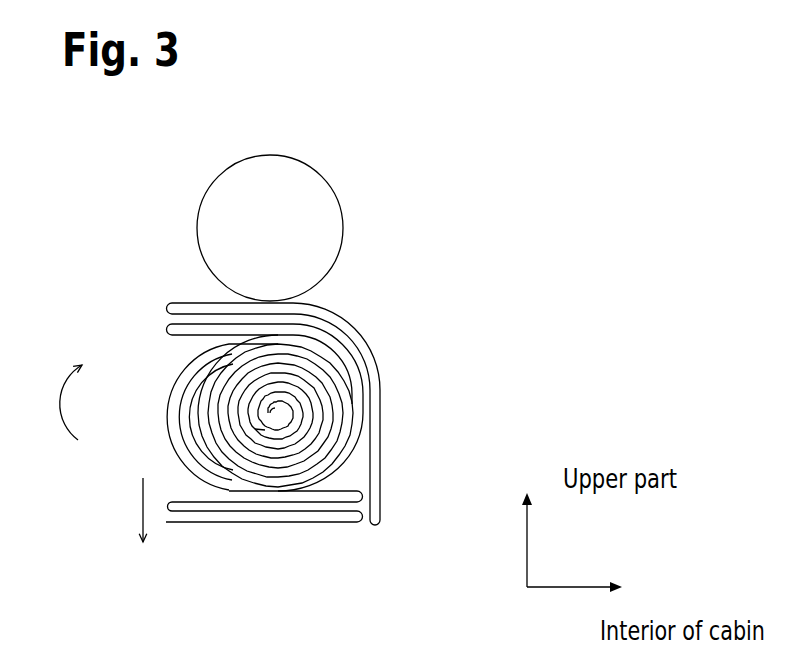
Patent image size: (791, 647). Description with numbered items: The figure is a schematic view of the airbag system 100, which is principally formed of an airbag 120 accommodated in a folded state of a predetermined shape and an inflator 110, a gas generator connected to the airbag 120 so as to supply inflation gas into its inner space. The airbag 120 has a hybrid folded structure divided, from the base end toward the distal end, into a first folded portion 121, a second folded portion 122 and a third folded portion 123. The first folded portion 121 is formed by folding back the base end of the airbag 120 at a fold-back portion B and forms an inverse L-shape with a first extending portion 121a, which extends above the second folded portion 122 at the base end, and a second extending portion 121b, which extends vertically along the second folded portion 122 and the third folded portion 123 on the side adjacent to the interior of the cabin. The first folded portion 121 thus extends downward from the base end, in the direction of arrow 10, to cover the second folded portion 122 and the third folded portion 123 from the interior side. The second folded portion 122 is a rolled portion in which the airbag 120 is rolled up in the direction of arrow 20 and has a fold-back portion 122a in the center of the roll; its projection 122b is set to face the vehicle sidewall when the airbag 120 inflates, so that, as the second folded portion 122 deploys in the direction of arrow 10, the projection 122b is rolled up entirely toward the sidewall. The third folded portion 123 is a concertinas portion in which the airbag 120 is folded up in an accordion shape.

The airbag system 100 is at (375, 138).
The inflator 110 is at (342, 217).
The airbag 120 is at (478, 482).
The first folded portion 121 is at (418, 274).
The first extending portion 121a is at (276, 308).
The second extending portion 121b is at (379, 402).
The second folded portion 122 is at (352, 434).
The fold-back portion 122a is at (276, 411).
The projection 122b is at (262, 433).
The third folded portion 123 is at (355, 491).
The fold-back portion B is at (378, 528).
The arrow 20 is at (54, 402).
The arrow 10 is at (123, 510).